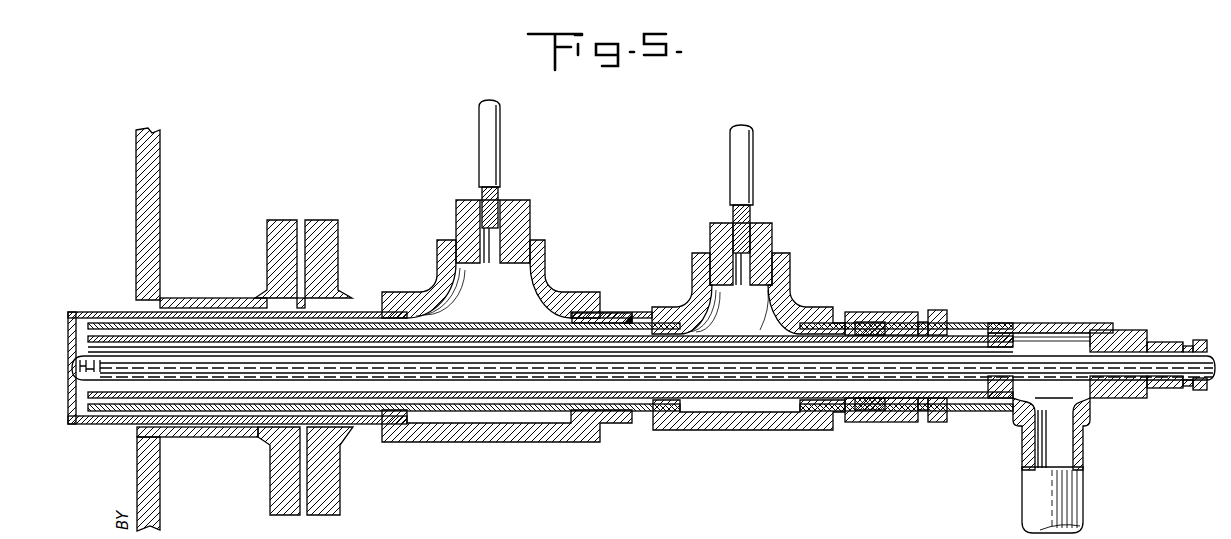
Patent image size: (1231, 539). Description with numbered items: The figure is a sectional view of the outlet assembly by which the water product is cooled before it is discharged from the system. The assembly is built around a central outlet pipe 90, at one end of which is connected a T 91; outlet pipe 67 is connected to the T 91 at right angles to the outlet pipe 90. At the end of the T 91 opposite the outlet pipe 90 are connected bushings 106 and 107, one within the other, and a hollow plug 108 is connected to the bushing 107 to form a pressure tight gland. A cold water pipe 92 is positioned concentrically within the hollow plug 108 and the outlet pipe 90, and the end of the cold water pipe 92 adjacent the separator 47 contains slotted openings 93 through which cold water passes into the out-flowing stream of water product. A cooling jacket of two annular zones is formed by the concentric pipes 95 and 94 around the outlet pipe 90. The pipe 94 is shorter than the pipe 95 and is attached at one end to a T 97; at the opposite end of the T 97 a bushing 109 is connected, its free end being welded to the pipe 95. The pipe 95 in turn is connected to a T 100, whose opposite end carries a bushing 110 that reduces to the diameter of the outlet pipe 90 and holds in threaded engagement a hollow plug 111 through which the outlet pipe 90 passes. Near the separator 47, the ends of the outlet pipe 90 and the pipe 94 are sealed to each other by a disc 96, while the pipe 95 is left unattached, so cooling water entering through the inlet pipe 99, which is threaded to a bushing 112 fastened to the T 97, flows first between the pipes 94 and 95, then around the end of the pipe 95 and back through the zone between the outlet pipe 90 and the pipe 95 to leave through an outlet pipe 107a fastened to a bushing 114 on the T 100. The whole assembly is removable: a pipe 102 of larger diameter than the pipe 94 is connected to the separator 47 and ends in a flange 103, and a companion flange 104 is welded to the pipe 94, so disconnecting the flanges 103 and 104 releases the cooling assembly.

The separator 47 is at (157, 180).
The outlet pipe 67 is at (1073, 490).
The outlet pipe 90 is at (790, 297).
The T 91 is at (1030, 323).
The cold water pipe 92 is at (1213, 356).
The slotted openings 93 is at (73, 366).
The pipe 94 is at (84, 318).
The pipe 95 is at (117, 330).
The disc 96 is at (68, 424).
The T 97 is at (455, 442).
The inlet pipe 99 is at (500, 150).
The T 100 is at (752, 430).
The pipe 102 is at (200, 437).
The flange 103 is at (272, 515).
The companion flange 104 is at (330, 515).
The bushing 106 is at (1127, 330).
The bushing 107 is at (1165, 342).
The outlet pipe 107a is at (753, 162).
The hollow plug 108 is at (1203, 392).
The bushing 109 is at (620, 312).
The bushing 110 is at (868, 312).
The hollow plug 111 is at (945, 310).
The bushing 112 is at (531, 215).
The bushing 114 is at (772, 232).